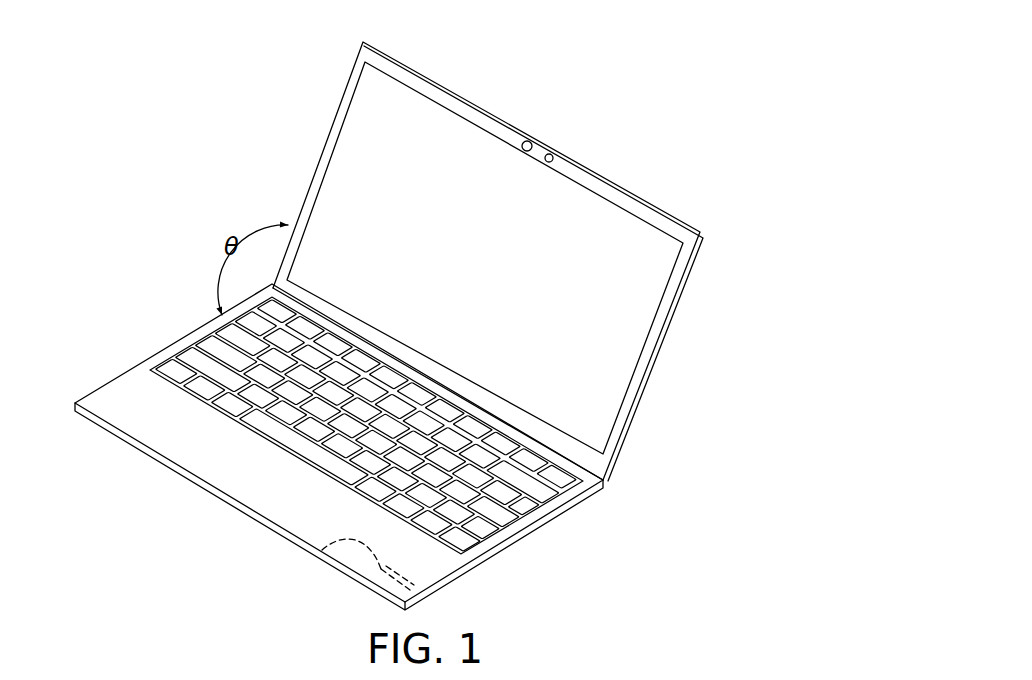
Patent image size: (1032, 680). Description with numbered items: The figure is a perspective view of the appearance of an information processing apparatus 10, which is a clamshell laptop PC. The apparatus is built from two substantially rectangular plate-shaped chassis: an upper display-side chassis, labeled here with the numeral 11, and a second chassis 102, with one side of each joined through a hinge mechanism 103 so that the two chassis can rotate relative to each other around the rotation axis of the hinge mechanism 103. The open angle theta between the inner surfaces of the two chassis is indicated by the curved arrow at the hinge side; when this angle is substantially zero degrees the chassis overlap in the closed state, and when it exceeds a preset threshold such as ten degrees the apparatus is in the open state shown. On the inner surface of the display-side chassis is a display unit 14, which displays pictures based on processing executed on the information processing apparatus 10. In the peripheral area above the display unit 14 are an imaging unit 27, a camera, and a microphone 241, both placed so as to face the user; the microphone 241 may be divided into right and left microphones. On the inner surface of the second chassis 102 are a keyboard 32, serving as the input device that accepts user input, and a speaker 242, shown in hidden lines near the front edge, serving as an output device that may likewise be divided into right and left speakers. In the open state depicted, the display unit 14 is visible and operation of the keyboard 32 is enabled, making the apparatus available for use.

The information processing apparatus 10 is at (624, 138).
The display chassis 11 is at (622, 183).
The display unit 14 is at (362, 168).
The imaging unit 27 is at (523, 141).
The microphone 241 is at (546, 154).
The keyboard 32 is at (212, 345).
The second chassis 102 is at (543, 527).
The hinge mechanism 103 is at (606, 482).
The speaker 242 is at (321, 550).